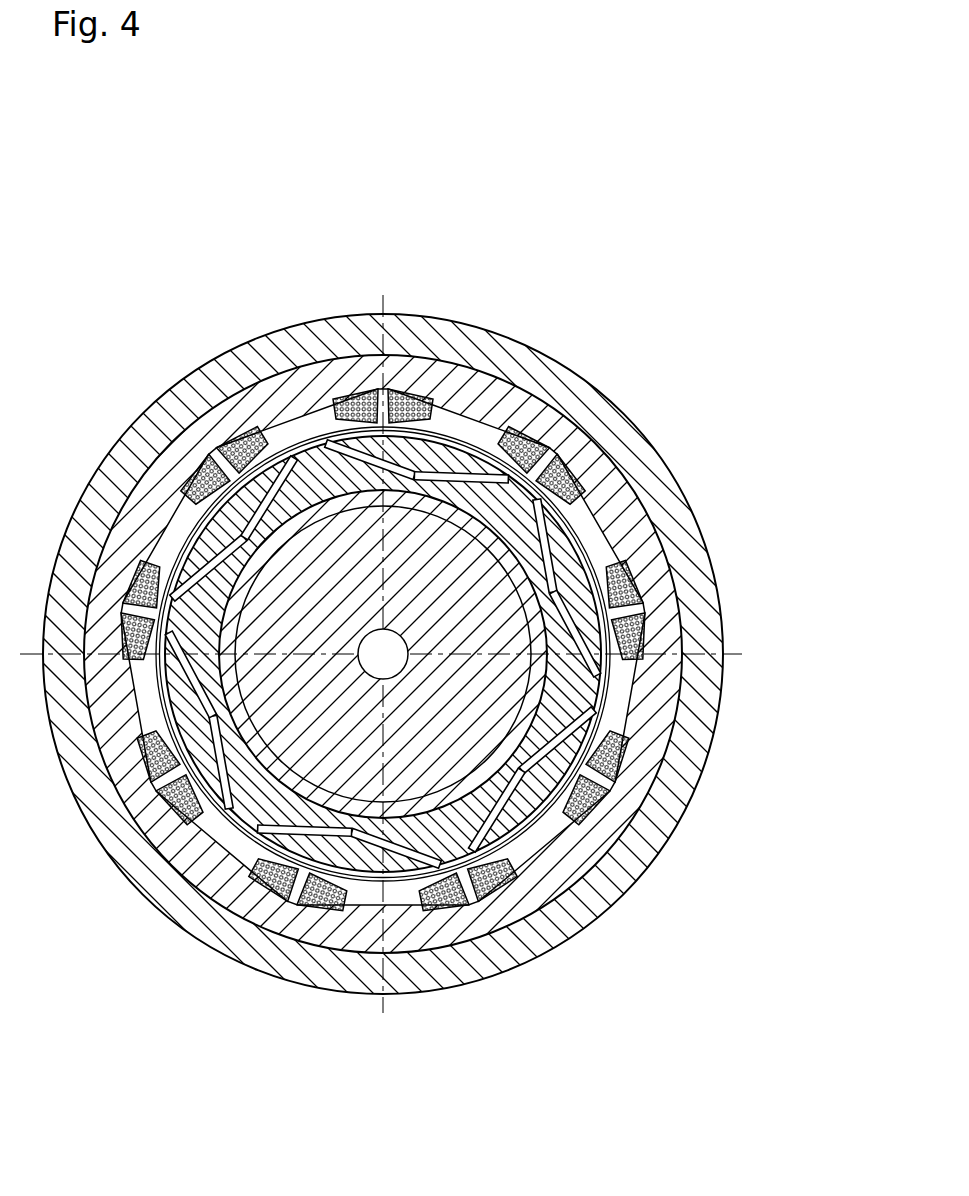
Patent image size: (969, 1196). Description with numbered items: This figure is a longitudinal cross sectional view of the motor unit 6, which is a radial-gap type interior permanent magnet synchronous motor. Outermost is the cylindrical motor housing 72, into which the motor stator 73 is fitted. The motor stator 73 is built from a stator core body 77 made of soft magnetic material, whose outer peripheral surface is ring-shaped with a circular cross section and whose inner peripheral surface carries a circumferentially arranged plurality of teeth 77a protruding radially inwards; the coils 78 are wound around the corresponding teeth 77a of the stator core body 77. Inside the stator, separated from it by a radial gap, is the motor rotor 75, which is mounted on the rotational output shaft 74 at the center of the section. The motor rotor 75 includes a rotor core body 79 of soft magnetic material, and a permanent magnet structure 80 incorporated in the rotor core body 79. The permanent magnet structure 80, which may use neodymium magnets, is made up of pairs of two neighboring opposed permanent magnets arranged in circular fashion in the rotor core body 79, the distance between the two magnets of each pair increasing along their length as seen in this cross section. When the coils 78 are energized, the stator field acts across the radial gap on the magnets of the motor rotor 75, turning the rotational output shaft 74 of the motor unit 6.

The motor unit 6 is at (477, 17).
The motor housing 72 is at (183, 375).
The motor stator 73 is at (405, 1).
The rotational output shaft 74 is at (344, 846).
The motor rotor 75 is at (422, 110).
The stator core body 77 is at (484, 500).
The teeth 77a is at (587, 530).
The coils 78 is at (382, 460).
The rotor core body 79 is at (455, 511).
The permanent magnet structure 80 is at (383, 488).